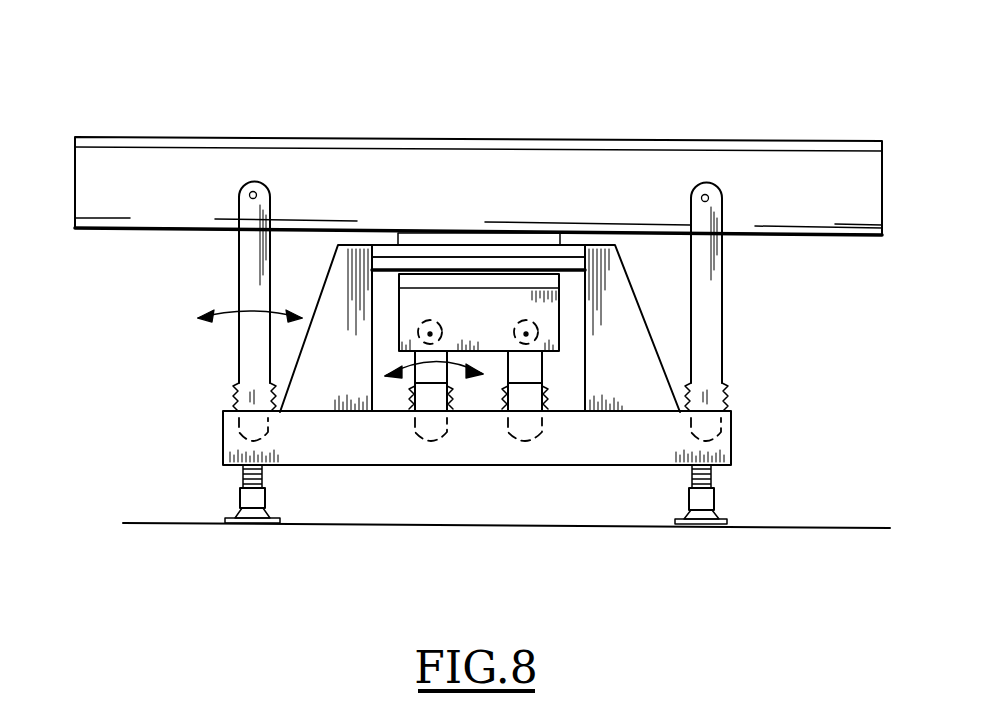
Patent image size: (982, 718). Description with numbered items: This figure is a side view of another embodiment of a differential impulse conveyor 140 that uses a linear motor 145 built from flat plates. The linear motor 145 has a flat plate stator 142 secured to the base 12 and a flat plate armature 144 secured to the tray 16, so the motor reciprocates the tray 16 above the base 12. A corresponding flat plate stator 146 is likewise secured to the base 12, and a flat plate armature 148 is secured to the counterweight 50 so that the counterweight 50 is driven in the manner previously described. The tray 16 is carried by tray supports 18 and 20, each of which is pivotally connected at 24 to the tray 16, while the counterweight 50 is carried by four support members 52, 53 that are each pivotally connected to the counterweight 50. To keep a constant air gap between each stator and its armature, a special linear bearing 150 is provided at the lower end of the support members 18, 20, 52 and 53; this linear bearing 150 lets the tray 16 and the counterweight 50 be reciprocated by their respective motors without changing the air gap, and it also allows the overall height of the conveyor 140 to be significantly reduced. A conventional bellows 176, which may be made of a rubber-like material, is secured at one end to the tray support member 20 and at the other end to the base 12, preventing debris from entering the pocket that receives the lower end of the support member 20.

The differential impulse conveyor 140 is at (183, 130).
The pivotal connection 24 is at (256, 191).
The flat plate stator 142 is at (413, 257).
The flat plate armature 144 is at (421, 256).
The flat plate stator 146 is at (522, 268).
The tray 16 is at (783, 201).
The linear motor 145 is at (638, 272).
The tray support 18 is at (257, 257).
The tray support 20 is at (715, 323).
The counterweight 50 is at (465, 321).
The flat plate armature 148 is at (520, 282).
The bellows 176 is at (233, 388).
The linear bearing 150 is at (257, 425).
The base 12 is at (362, 450).
The support member 52 is at (442, 373).
The support member 53 is at (540, 358).